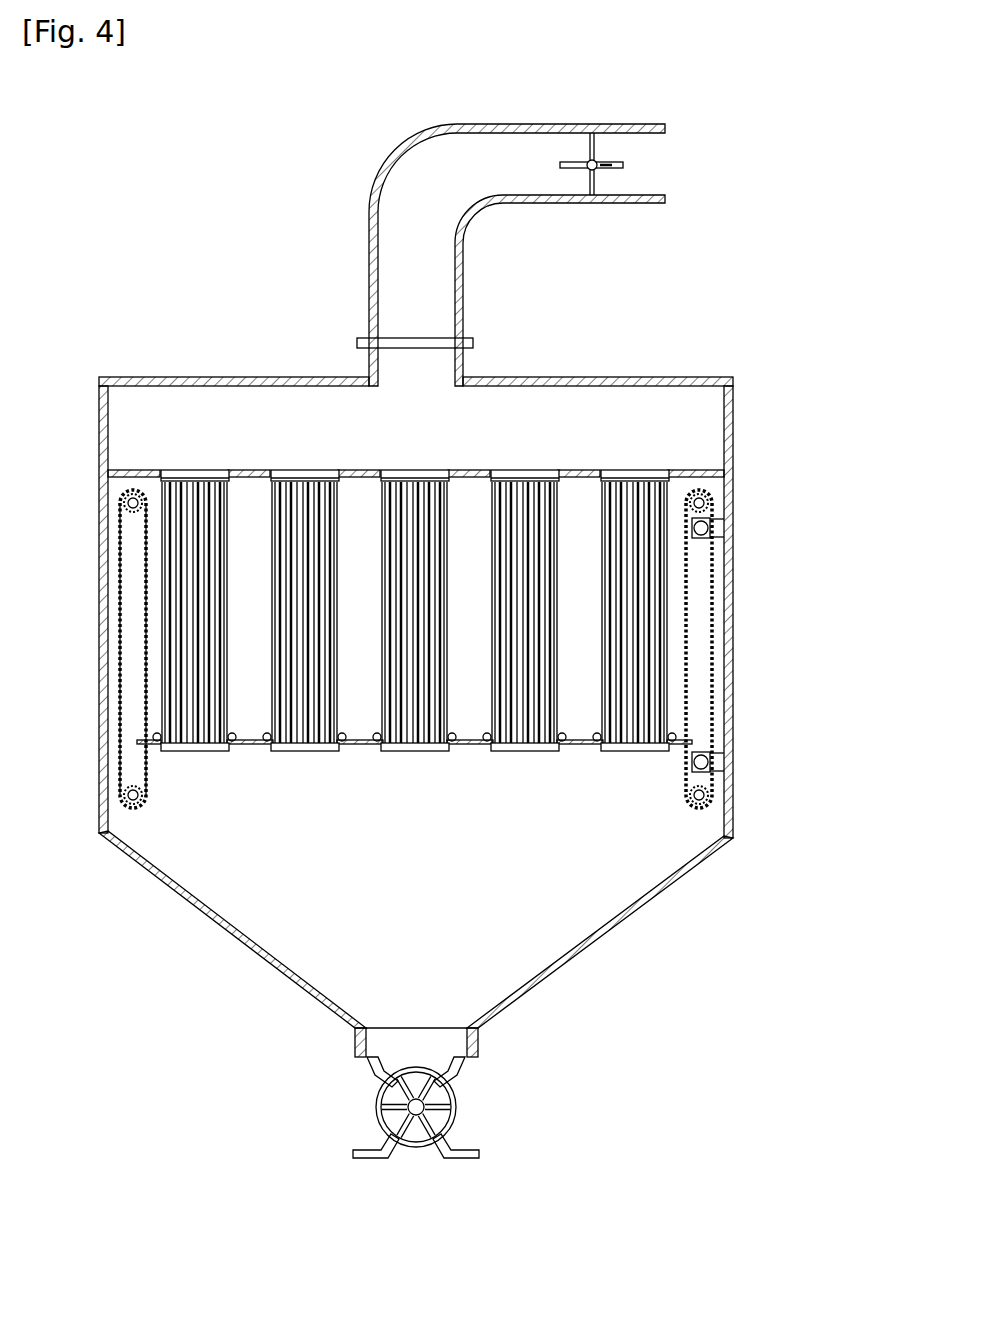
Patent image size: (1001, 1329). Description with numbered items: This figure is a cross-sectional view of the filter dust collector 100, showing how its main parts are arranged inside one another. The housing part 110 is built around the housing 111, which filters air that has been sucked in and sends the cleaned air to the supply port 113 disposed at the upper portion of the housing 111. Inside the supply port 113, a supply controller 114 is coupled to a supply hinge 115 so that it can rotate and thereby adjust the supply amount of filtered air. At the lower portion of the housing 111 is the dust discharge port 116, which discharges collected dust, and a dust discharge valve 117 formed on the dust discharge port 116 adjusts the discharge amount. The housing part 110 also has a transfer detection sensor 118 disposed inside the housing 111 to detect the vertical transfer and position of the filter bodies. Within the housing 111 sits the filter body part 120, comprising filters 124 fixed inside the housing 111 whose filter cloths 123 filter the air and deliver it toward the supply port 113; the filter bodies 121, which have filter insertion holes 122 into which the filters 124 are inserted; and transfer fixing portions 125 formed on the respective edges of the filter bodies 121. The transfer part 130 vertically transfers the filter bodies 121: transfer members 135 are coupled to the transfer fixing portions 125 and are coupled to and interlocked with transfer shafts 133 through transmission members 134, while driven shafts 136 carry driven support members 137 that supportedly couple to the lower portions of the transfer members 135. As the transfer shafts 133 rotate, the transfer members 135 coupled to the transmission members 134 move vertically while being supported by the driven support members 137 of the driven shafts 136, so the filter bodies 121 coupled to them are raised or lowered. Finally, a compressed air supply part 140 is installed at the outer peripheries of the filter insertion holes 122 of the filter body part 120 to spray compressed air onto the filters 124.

The filter dust collector 100 is at (100, 190).
The housing part 110 is at (103, 375).
The housing 111 is at (158, 375).
The supply port 113 is at (388, 158).
The supply controller 114 is at (592, 158).
The supply hinge 115 is at (606, 170).
The dust discharge port 116 is at (478, 1043).
The dust discharge valve 117 is at (457, 1107).
The transfer detection sensor 118 is at (712, 528).
The filter body part 120 is at (590, 756).
The filter bodies 121 is at (572, 750).
The filter insertion holes 122 is at (555, 750).
The filter cloths 123 is at (660, 625).
The filters 124 is at (645, 478).
The transfer fixing portions 125 is at (713, 722).
The transfer part 130 is at (122, 497).
The transfer shafts 133 is at (121, 497).
The transmission members 134 is at (128, 528).
The transfer members 135 is at (115, 585).
The driven shafts 136 is at (118, 796).
The driven support members 137 is at (128, 771).
The compressed air supply part 140 is at (258, 744).